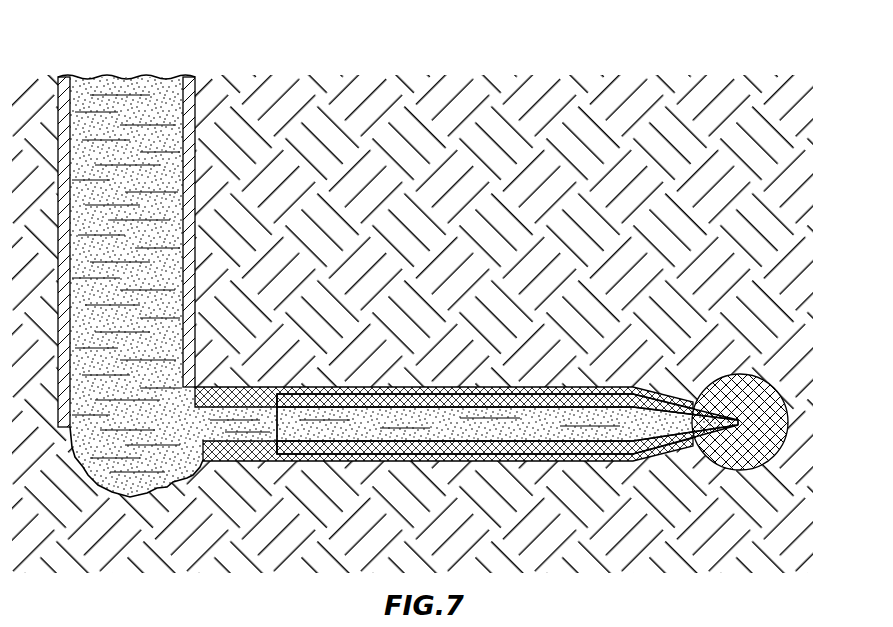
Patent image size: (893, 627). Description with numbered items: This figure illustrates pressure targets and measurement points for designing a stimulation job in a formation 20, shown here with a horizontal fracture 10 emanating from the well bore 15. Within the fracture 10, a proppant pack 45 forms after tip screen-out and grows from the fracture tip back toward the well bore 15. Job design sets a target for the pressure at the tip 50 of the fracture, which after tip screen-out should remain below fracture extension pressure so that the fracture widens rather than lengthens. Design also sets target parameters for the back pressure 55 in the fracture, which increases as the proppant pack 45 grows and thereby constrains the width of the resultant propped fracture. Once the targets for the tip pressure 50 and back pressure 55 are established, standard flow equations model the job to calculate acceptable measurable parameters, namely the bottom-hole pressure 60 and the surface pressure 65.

The formation 20 is at (703, 57).
The surface pressure 65 is at (131, 79).
The bottom-hole pressure 60 is at (120, 497).
The well bore 15 is at (157, 458).
The back pressure 55 is at (297, 458).
The proppant pack 45 is at (487, 423).
The fracture 10 is at (407, 418).
The pressure at the tip 50 is at (753, 437).